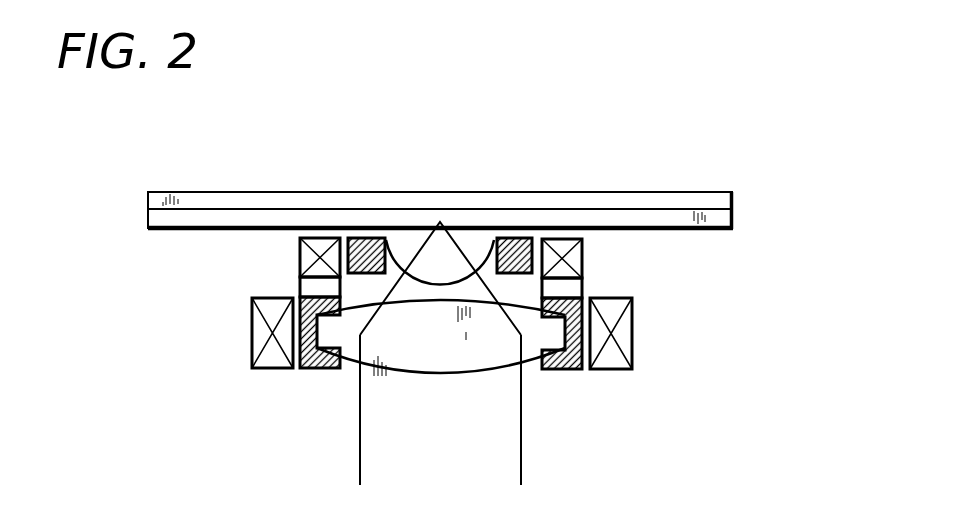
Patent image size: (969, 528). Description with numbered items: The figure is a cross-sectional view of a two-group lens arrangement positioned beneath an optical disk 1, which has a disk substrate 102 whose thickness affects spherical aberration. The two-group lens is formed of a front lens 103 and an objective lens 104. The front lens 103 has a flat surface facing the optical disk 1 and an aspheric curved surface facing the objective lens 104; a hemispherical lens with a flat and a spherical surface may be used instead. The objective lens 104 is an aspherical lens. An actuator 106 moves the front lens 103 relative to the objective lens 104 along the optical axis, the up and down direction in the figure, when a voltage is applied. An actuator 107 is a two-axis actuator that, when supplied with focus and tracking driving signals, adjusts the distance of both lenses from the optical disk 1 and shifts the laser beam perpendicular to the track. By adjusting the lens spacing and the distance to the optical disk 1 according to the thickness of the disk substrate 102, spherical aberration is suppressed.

The optical disk 1 is at (478, 181).
The disk substrate 102 is at (733, 216).
The front lens 103 is at (470, 252).
The objective lens 104 is at (440, 367).
The actuator 106 is at (568, 260).
The actuator 107 is at (622, 338).